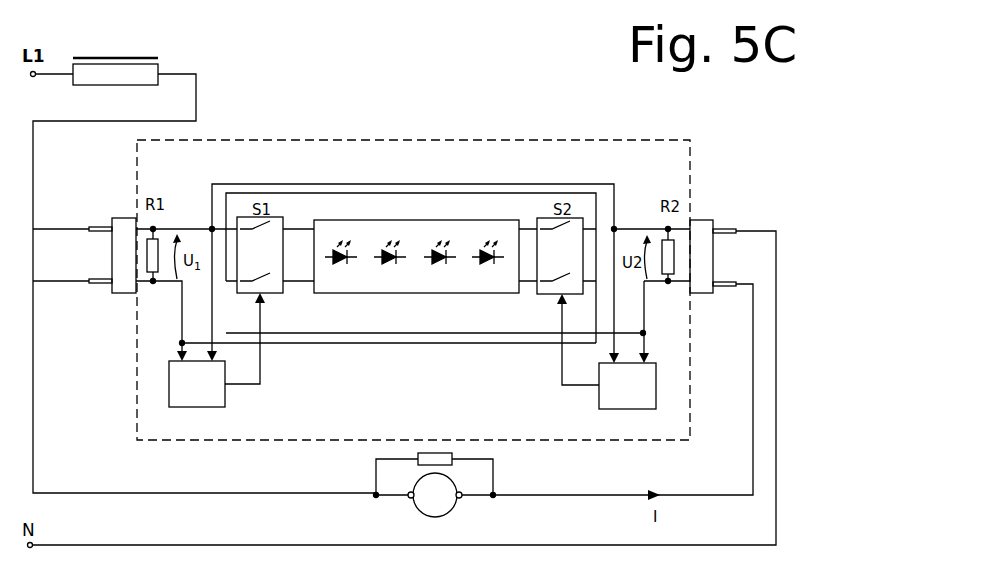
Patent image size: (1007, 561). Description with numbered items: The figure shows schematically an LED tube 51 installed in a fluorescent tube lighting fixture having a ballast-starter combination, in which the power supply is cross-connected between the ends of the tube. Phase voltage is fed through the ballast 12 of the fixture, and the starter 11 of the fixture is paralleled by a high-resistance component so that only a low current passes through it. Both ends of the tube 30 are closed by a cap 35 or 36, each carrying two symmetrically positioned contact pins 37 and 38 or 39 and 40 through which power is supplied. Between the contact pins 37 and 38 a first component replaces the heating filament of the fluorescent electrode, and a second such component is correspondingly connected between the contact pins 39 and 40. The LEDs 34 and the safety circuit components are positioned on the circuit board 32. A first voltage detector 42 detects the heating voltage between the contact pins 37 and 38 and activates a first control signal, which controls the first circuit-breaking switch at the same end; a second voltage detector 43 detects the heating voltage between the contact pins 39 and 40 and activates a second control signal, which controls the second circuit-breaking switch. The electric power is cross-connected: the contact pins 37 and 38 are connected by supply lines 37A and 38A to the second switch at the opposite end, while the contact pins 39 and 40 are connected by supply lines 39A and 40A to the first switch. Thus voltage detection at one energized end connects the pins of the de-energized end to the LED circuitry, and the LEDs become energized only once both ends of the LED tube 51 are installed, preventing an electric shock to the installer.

The starter 11 is at (420, 511).
The ballast 12 is at (118, 85).
The tube 30 is at (520, 139).
The circuit board 32 is at (492, 295).
The LEDs 34 is at (343, 266).
The cap 35 is at (128, 218).
The cap 36 is at (704, 220).
The contact pin 37 is at (100, 226).
The contact pin 38 is at (100, 285).
The contact pin 39 is at (735, 228).
The contact pin 40 is at (726, 290).
The supply line 37A is at (346, 183).
The supply line 38A is at (395, 344).
The supply line 39A is at (604, 191).
The supply line 40A is at (400, 333).
The voltage detector 42 is at (225, 407).
The voltage detector 43 is at (599, 409).
The LED tube 51 is at (444, 123).